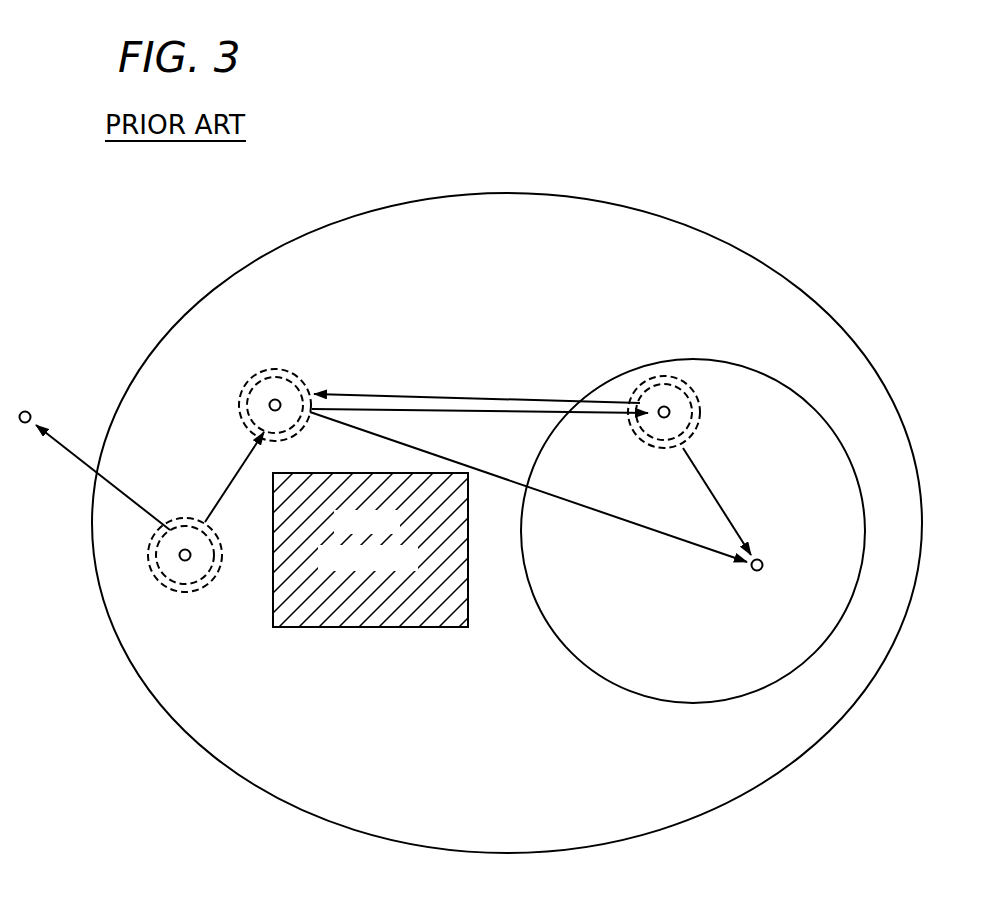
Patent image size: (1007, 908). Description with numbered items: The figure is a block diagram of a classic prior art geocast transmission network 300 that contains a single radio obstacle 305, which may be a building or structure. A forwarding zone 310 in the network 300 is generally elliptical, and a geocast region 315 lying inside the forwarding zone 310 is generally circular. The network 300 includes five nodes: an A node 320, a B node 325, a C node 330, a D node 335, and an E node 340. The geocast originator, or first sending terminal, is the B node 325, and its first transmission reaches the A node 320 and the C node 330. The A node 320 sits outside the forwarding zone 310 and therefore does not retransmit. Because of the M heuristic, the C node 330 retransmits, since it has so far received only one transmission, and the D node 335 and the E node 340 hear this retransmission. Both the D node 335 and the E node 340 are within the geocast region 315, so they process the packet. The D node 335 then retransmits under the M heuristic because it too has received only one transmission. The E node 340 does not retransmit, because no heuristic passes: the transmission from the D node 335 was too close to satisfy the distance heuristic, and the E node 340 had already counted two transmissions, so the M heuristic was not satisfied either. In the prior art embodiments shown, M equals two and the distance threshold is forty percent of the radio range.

The geocast transmission network 300 is at (408, 178).
The radio obstacle 305 is at (358, 630).
The forwarding zone 310 is at (576, 196).
The geocast region 315 is at (683, 700).
The A node 320 is at (26, 410).
The B node 325 is at (185, 562).
The C node 330 is at (276, 398).
The D node 335 is at (664, 405).
The E node 340 is at (760, 558).